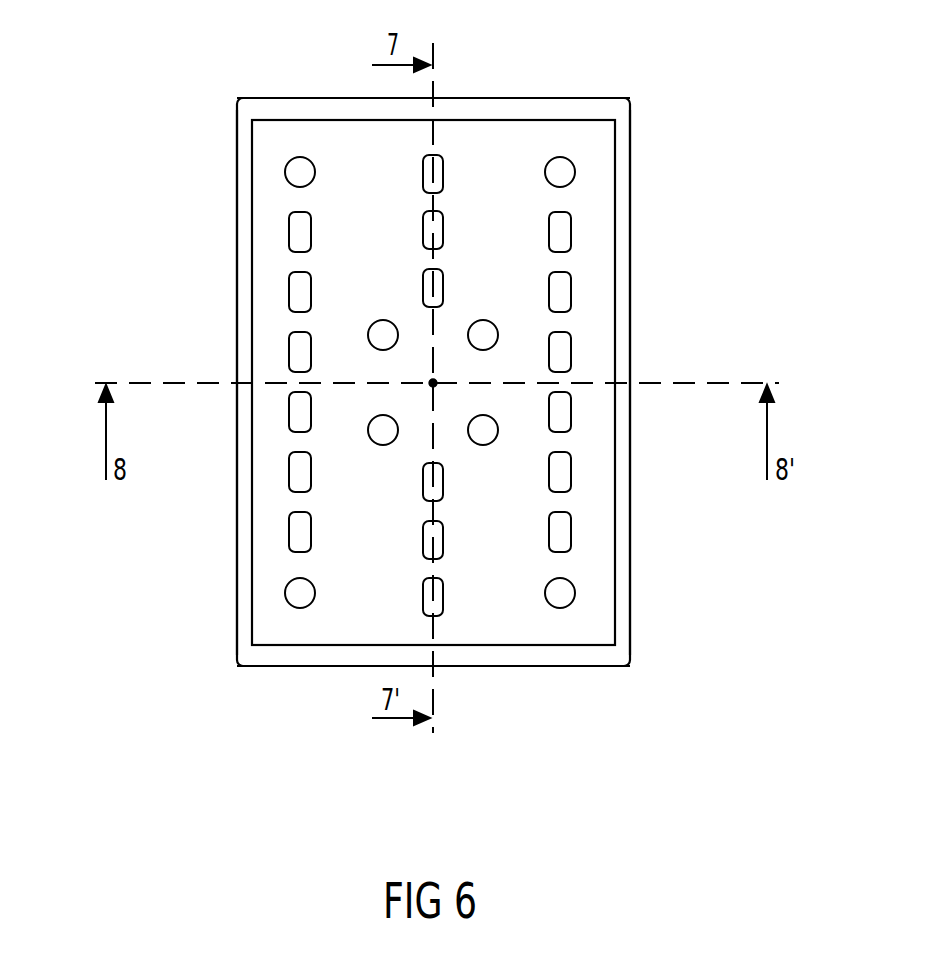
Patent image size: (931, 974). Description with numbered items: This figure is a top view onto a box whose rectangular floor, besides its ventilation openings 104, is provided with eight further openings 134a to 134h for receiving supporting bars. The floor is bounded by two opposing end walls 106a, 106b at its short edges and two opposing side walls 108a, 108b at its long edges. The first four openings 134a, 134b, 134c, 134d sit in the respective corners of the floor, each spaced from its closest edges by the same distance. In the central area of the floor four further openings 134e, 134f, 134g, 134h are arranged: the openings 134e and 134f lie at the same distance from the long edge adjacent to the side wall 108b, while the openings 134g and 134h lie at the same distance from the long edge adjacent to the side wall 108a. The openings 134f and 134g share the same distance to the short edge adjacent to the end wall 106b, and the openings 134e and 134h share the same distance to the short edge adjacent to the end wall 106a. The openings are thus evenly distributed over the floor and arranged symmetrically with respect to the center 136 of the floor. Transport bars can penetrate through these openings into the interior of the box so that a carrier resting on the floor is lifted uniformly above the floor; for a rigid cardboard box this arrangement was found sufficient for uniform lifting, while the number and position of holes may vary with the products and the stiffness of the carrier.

The ventilation openings 104 is at (565, 283).
The end wall 106a is at (290, 660).
The end wall 106b is at (563, 97).
The side wall 108a is at (627, 186).
The side wall 108b is at (237, 190).
The opening 134a is at (296, 170).
The opening 134b is at (564, 170).
The opening 134c is at (565, 596).
The opening 134d is at (296, 596).
The opening 134e is at (383, 430).
The opening 134f is at (380, 335).
The opening 134g is at (486, 335).
The opening 134h is at (483, 430).
The center 136 is at (430, 385).